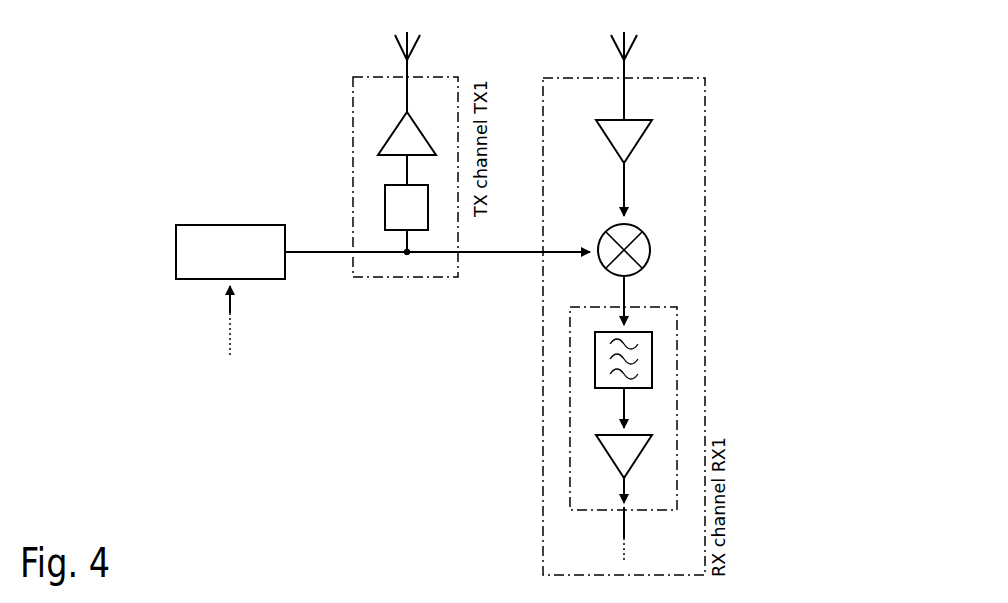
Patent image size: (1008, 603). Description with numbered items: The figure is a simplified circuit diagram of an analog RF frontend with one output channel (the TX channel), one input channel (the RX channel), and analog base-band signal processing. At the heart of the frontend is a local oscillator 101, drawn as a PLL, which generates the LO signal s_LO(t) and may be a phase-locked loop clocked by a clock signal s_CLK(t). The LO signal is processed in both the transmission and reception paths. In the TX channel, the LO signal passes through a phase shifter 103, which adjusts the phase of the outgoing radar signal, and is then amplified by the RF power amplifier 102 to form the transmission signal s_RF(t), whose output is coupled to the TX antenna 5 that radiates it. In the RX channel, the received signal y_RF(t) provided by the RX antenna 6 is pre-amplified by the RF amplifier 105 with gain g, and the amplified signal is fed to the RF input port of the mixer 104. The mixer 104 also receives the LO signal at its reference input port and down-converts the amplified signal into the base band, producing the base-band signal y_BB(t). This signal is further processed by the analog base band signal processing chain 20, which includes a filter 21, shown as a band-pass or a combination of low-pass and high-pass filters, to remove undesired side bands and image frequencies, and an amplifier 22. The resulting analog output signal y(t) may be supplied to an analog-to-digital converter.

The TX antenna 5 is at (395, 50).
The RX antenna 6 is at (640, 50).
The analog base band signal processing chain 20 is at (468, 430).
The band-pass filter 21 is at (595, 355).
The amplifier 22 is at (610, 455).
The local oscillator 101 is at (225, 225).
The RF power amplifier 102 is at (380, 155).
The phase shifter 103 is at (385, 195).
The mixer 104 is at (651, 242).
The RF amplifier 105 is at (650, 135).